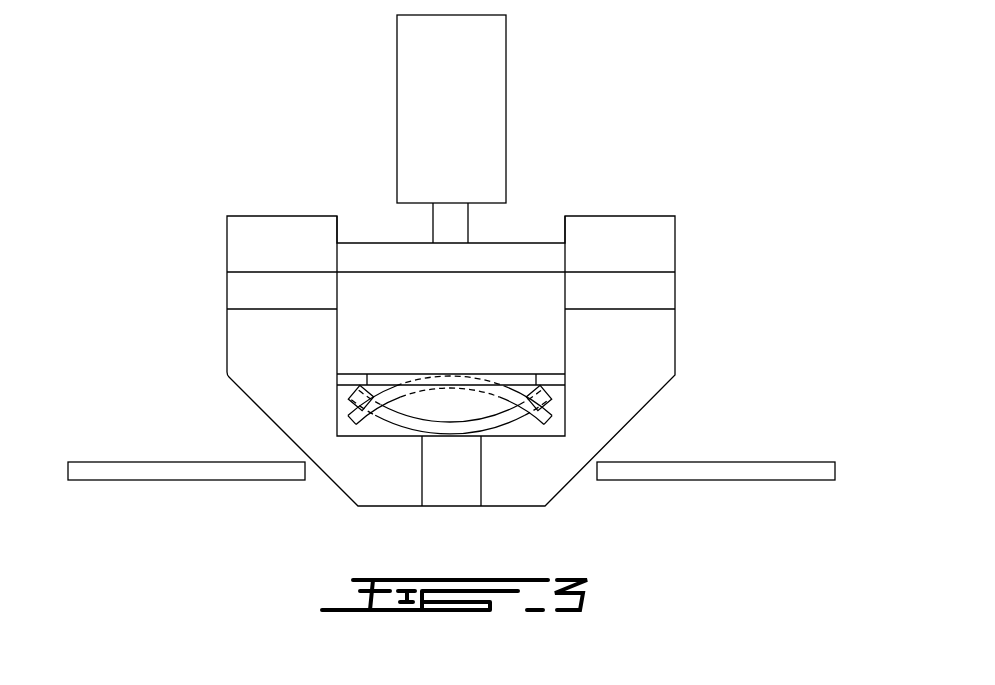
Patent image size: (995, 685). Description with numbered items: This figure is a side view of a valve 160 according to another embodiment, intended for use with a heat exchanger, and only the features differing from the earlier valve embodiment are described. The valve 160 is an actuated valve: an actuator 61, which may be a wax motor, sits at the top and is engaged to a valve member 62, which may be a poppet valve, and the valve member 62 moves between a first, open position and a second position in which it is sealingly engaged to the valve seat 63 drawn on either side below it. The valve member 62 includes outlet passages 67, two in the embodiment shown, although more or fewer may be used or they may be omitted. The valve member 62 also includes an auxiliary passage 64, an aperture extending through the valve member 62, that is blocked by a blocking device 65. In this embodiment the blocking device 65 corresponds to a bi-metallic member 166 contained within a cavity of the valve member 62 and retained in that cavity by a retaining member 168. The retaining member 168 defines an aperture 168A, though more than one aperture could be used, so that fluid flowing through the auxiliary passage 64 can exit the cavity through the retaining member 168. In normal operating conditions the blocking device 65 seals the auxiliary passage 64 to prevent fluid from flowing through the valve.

The actuator 61 is at (506, 85).
The valve 160 is at (742, 212).
The valve member 62 is at (184, 355).
The outlet passages 67 is at (283, 270).
The retaining member 168 is at (372, 358).
The aperture 168A is at (534, 380).
The blocking device 65 is at (337, 432).
The bi-metallic member 166 is at (347, 409).
The auxiliary passage 64 is at (486, 469).
The valve seat 63 is at (185, 481).